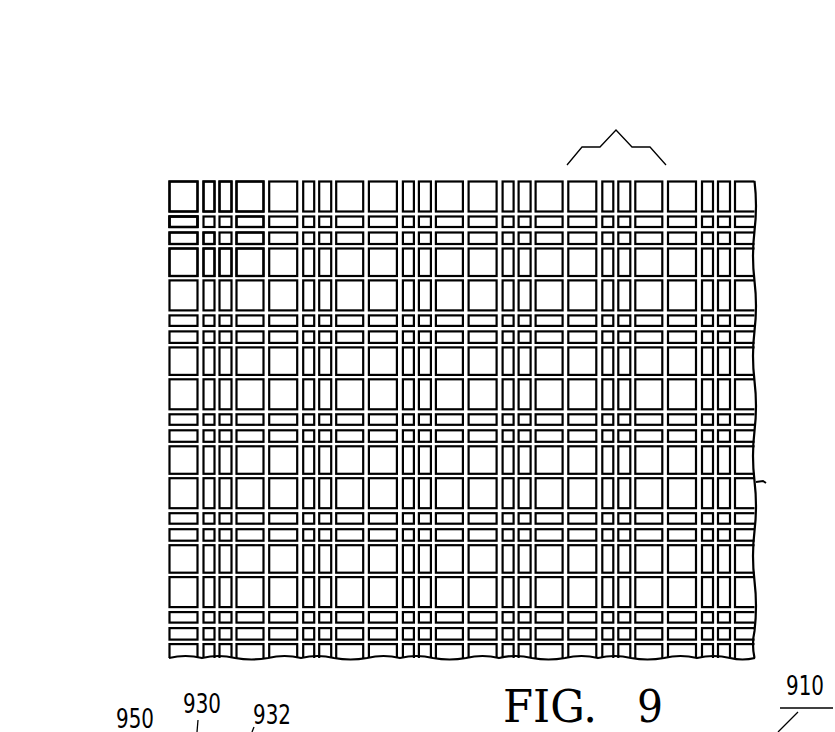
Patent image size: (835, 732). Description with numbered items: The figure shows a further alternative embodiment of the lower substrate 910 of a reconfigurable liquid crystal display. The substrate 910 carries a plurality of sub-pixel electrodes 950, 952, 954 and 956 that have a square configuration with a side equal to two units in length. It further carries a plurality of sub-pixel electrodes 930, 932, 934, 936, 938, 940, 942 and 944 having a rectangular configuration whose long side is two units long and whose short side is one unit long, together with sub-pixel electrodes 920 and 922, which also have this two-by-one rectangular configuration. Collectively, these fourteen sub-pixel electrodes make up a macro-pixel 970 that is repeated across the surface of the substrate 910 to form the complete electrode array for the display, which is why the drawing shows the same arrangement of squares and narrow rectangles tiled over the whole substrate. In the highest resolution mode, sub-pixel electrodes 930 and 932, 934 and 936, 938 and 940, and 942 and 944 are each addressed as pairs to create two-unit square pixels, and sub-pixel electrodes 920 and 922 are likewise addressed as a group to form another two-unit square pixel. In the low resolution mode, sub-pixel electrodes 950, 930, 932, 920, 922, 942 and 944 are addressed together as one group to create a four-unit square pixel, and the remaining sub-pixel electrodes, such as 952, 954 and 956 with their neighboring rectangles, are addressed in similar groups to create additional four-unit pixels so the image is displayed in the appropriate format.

The lower substrate 910 is at (722, 133).
The macro-pixel 970 is at (616, 131).
The sub-pixel electrode 950 is at (183, 193).
The sub-pixel electrode 920 is at (180, 219).
The sub-pixel electrode 944 is at (190, 221).
The sub-pixel electrode 930 is at (210, 192).
The sub-pixel electrode 932 is at (223, 192).
The sub-pixel electrode 952 is at (248, 192).
The sub-pixel electrode 934 is at (250, 222).
The sub-pixel electrode 936 is at (260, 238).
The sub-pixel electrode 954 is at (255, 262).
The sub-pixel electrode 942 is at (183, 238).
The sub-pixel electrode 956 is at (183, 260).
The sub-pixel electrode 922 is at (212, 237).
The sub-pixel electrode 940 is at (210, 268).
The sub-pixel electrode 938 is at (225, 268).